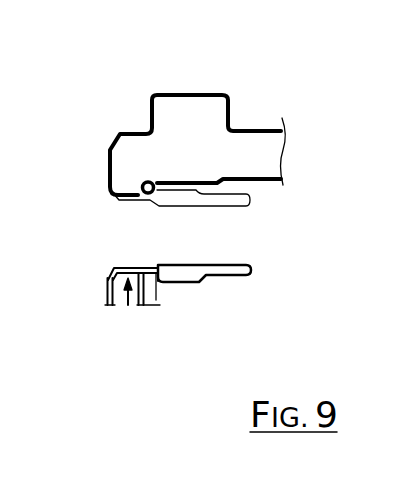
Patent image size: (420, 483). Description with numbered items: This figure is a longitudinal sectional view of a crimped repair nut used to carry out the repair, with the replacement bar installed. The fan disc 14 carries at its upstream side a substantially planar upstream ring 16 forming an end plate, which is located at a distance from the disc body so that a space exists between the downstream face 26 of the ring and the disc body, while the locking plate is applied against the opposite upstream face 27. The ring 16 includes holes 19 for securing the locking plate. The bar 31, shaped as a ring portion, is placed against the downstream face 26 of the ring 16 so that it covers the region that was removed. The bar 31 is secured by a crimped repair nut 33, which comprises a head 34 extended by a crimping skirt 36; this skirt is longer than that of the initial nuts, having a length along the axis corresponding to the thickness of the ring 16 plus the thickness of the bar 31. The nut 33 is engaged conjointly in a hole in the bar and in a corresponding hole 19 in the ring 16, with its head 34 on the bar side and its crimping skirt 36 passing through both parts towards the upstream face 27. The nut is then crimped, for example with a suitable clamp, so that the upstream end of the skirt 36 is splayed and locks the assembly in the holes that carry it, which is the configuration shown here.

The fan disc 14 is at (266, 97).
The upstream ring 16 is at (118, 172).
The hole 19 is at (127, 290).
The downstream face 26 is at (146, 292).
The upstream face 27 is at (108, 293).
The bar 31 is at (155, 285).
The crimped repair nut 33 is at (266, 297).
The head 34 is at (170, 274).
The crimping skirt 36 is at (133, 267).